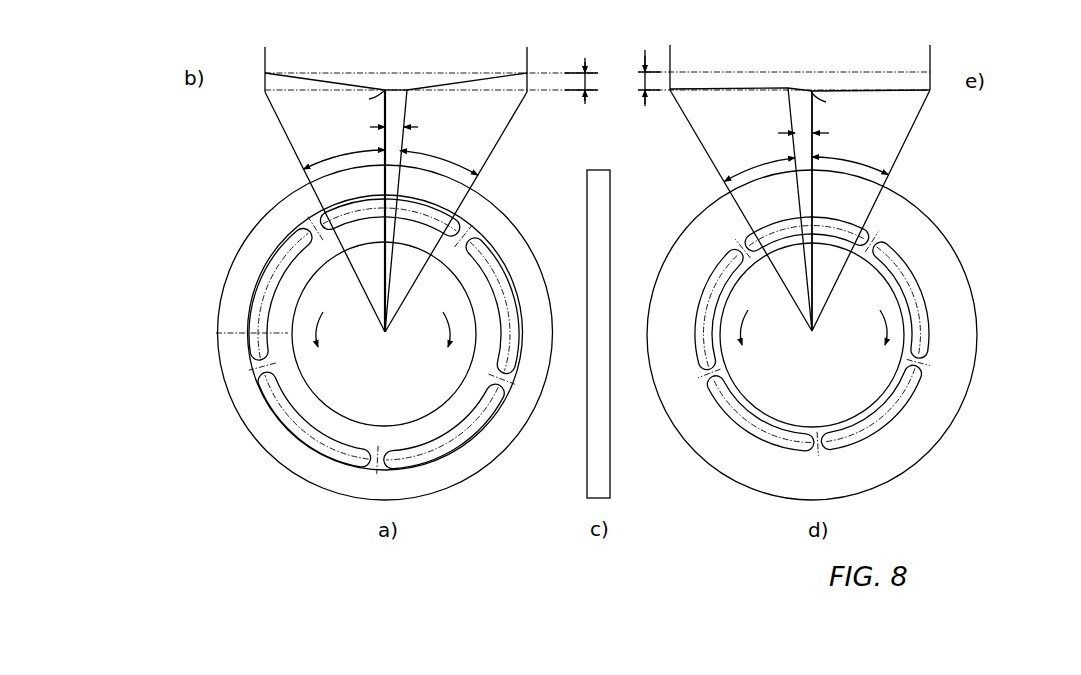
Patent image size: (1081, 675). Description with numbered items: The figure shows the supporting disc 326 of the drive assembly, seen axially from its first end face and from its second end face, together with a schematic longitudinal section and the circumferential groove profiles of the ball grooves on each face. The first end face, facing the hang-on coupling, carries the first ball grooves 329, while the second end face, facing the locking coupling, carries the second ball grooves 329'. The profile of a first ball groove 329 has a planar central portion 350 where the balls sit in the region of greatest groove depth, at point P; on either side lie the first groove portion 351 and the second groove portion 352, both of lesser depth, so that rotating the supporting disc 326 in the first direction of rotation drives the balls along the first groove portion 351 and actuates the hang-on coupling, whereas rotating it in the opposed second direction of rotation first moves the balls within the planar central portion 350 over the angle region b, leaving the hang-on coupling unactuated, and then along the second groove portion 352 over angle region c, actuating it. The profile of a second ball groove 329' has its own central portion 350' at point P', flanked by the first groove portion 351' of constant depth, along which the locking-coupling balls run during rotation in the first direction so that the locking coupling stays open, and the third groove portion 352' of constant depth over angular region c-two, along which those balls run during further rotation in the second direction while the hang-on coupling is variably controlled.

The supporting disc 326 is at (229, 239).
The first ball grooves 329 is at (401, 332).
The second ball grooves 329' is at (866, 336).
The central portion 350 is at (431, 172).
The first groove portion 351 is at (325, 171).
The second groove portion 352 is at (456, 173).
The central portion of second ball groove 350' is at (779, 170).
The first groove portion of second ball groove 351' is at (871, 170).
The third groove portion 352' is at (741, 170).